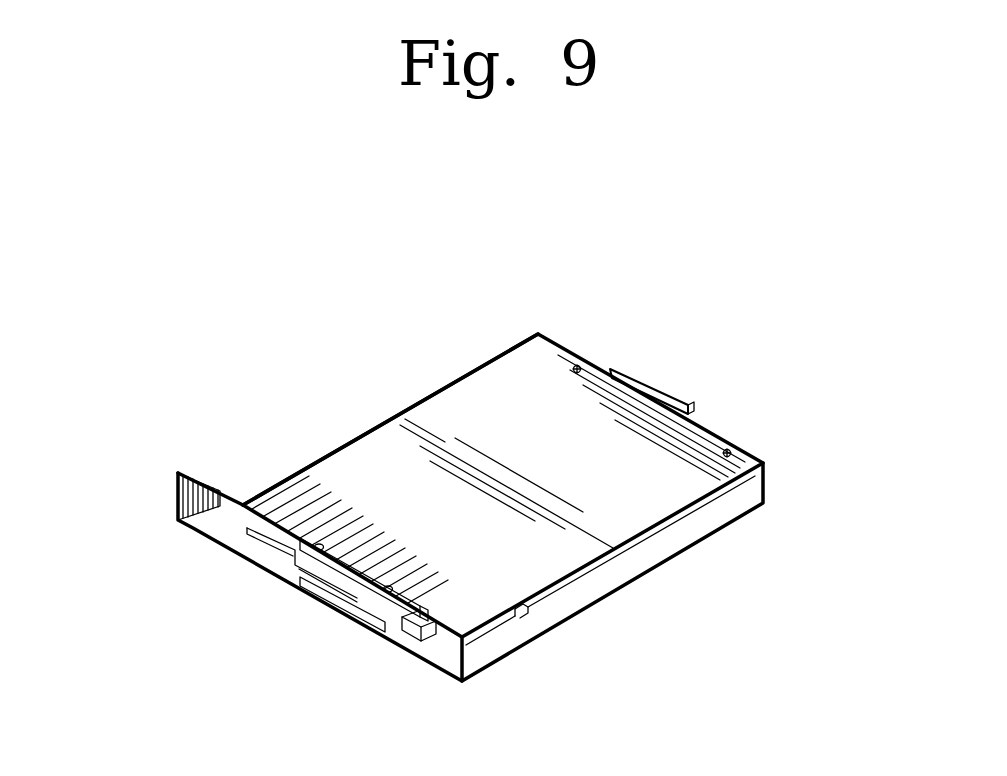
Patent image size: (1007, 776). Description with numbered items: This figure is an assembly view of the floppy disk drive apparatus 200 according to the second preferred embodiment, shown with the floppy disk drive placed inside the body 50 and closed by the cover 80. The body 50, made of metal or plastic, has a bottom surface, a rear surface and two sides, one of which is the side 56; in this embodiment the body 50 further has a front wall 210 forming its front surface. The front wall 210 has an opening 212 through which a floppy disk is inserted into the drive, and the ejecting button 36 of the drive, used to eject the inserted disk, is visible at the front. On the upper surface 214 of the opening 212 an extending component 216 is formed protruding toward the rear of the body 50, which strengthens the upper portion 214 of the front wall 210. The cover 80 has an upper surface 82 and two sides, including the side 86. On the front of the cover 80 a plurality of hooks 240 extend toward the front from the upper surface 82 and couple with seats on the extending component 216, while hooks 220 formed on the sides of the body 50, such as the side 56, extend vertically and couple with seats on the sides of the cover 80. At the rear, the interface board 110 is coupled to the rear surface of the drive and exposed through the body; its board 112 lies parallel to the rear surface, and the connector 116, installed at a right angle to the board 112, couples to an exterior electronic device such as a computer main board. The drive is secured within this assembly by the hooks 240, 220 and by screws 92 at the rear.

The floppy disk drive apparatus 200 is at (331, 258).
The body 50 is at (166, 495).
The front wall 210 is at (208, 523).
The opening 212 is at (320, 576).
The upper surface of the opening 214 is at (363, 584).
The extending component 216 is at (400, 596).
The hooks 240 is at (320, 546).
The ejecting button 36 is at (412, 614).
The cover 80 is at (308, 468).
The side of cover 86 is at (352, 440).
The upper surface of cover 82 is at (423, 420).
The screws 92 is at (578, 365).
The connector 116 is at (650, 371).
The board 112 is at (705, 400).
The interface board 110 is at (748, 440).
The side 56 is at (597, 600).
The hooks 220 is at (527, 612).